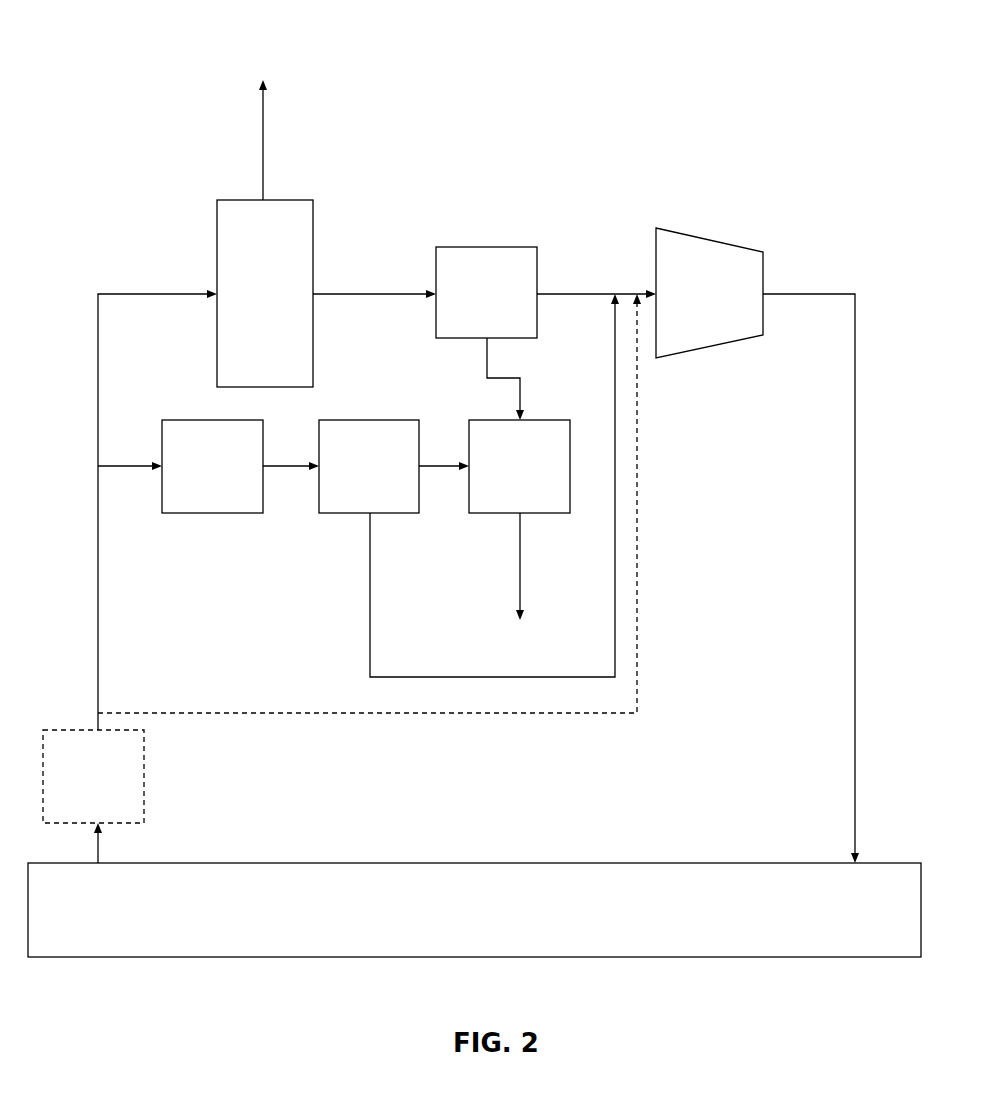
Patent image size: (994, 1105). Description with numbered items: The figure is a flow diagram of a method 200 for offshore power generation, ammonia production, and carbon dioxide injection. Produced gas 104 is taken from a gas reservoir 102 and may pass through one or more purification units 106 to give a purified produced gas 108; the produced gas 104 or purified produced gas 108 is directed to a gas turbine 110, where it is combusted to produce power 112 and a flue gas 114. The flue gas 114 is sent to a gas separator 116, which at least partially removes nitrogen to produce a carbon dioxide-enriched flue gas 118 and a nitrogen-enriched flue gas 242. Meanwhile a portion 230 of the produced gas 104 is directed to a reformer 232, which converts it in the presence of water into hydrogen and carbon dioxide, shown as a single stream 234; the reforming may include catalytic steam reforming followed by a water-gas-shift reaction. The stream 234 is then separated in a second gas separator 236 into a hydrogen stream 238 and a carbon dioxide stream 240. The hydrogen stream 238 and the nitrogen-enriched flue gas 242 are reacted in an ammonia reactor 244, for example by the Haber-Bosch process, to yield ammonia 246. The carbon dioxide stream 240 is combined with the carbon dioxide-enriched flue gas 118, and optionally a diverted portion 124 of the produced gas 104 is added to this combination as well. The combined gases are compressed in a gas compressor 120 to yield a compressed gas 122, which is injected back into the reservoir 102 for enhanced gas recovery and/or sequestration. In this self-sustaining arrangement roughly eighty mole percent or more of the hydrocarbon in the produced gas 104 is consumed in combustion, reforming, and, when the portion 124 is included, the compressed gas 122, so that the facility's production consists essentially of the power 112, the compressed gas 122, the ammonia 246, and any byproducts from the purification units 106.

The method for power generation, ammonia production, and CO2 injection 200 is at (110, 60).
The gas reservoir 102 is at (474, 910).
The produced gas 104 is at (98, 860).
The purification unit 106 is at (93, 776).
The purified produced gas 108 is at (98, 378).
The gas turbine 110 is at (265, 293).
The power 112 is at (265, 130).
The flue gas 114 is at (383, 292).
The gas separator 116 is at (486, 292).
The carbon dioxide-enriched flue gas 118 is at (583, 292).
The gas compressor 120 is at (709, 293).
The compressed gas 122 is at (855, 523).
The portion of the produced gas 124 is at (270, 713).
The portion of the produced gas 230 is at (115, 466).
The reformer 232 is at (212, 466).
The stream comprising hydrogen and carbon dioxide 234 is at (275, 466).
The gas separator 236 is at (369, 466).
The hydrogen stream 238 is at (427, 468).
The carbon dioxide stream 240 is at (370, 643).
The nitrogen-enriched flue gas 242 is at (487, 355).
The ammonia reactor 244 is at (519, 466).
The ammonia 246 is at (520, 568).